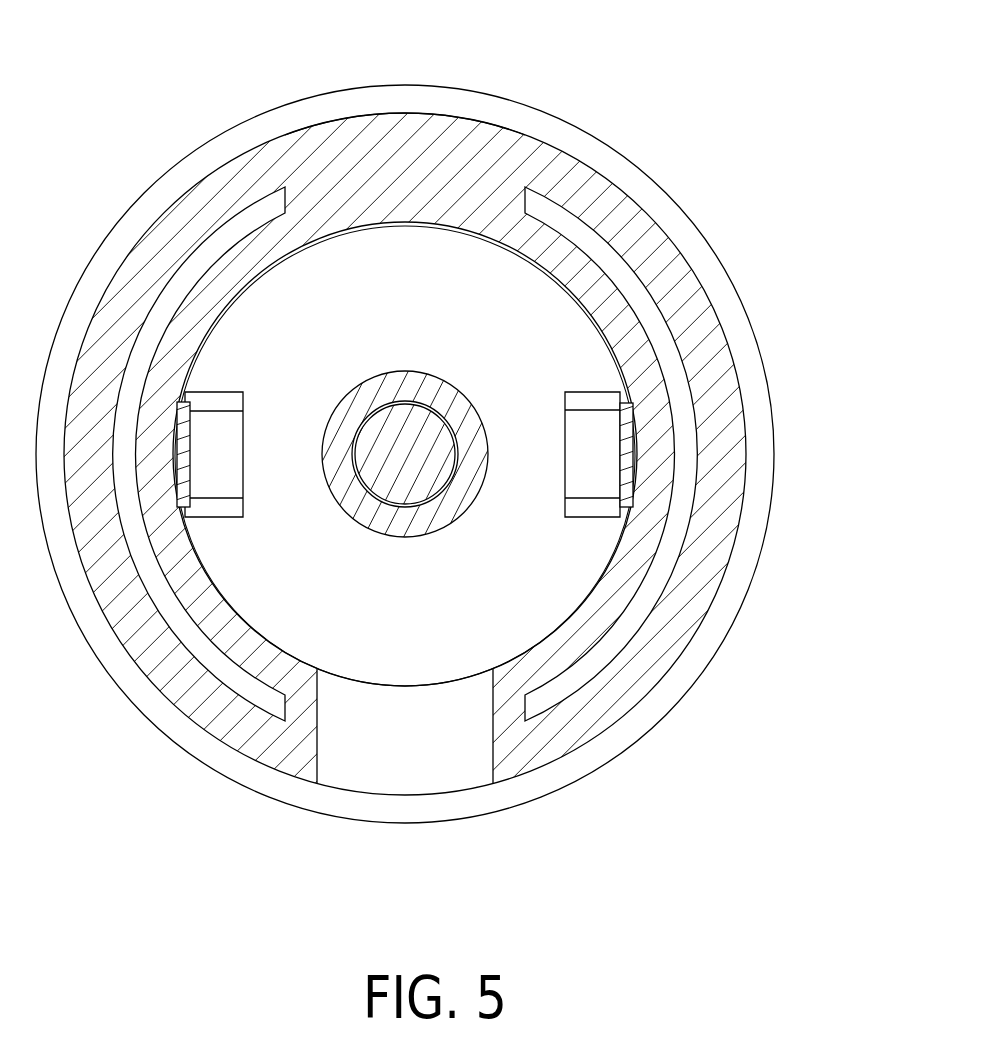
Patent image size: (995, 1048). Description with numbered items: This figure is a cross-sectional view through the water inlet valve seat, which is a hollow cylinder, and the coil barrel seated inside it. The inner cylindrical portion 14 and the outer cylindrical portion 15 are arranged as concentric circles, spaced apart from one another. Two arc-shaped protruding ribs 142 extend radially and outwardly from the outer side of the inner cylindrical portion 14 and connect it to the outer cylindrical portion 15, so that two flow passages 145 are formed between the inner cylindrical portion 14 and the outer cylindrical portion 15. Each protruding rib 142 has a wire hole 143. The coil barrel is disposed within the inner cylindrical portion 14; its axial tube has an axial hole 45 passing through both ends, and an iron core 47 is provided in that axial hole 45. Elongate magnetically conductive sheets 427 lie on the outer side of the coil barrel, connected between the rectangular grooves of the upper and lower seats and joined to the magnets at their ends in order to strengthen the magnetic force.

The inner cylindrical portion 14 is at (625, 578).
The outer cylindrical portion 15 is at (663, 270).
The axial hole 45 is at (388, 405).
The iron core 47 is at (418, 468).
The arc-shaped protruding rib 142 is at (473, 188).
The wire hole 143 is at (492, 757).
The flow passage 145 is at (662, 342).
The magnetically conductive sheet 427 is at (628, 442).